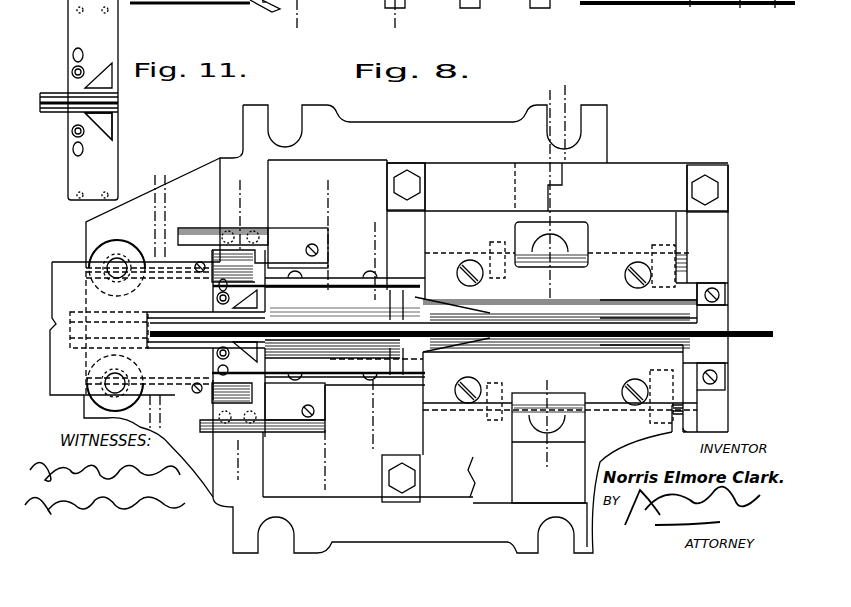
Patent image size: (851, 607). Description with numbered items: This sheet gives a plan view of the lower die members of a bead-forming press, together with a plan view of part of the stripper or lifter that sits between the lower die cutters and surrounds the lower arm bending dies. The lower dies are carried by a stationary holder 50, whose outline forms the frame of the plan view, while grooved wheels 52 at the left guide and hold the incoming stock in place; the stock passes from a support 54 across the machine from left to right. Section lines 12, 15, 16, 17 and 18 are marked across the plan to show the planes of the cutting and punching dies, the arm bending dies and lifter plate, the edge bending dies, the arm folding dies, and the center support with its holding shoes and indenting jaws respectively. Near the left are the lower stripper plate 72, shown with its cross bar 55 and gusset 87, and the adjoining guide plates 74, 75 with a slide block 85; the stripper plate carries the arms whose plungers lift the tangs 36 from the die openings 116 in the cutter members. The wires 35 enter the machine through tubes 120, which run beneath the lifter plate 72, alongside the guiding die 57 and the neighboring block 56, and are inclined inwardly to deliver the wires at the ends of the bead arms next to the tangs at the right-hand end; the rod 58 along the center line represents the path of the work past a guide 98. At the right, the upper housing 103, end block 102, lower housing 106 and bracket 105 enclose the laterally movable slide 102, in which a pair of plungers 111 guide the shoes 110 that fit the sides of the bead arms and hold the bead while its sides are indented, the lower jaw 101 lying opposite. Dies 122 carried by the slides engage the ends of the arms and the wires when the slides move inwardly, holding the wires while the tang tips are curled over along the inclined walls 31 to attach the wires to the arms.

In FIG. 8, the stationary holder 50 is at (418, 130).
In FIG. 8, the grooved wheels 52 is at (97, 258).
In FIG. 8, the support 54 is at (58, 312).
In FIG. 8, the section line 12— 12 is at (159, 300).
In FIG. 8, the section line 15— 15 is at (239, 329).
In FIG. 8, the section line 16— 16 is at (314, 249).
In FIG. 8, the section line 17— 17 is at (393, 225).
In FIG. 8, the section line 18— 18 is at (553, 259).
In FIG. 8, the slide block 85 is at (262, 337).
In FIG. 8, the upper guide plate 74 is at (292, 243).
In FIG. 8, the lower guide plate 75 is at (252, 383).
In FIG. 11, the lower stripper plate 72 is at (76, 28).
In FIG. 8, the lower stripper plate 72 is at (208, 315).
In FIG. 11, the cross bar 55 is at (52, 98).
In FIG. 8, the cross bar 55 is at (206, 343).
In FIG. 11, the gusset 87 is at (112, 126).
In FIG. 8, the die openings 116 is at (302, 393).
In FIG. 8, the rod 58 is at (738, 333).
In FIG. 8, the tubes 120 is at (340, 288).
In FIG. 8, the guide 98 is at (393, 290).
In FIG. 8, the upper housing 103 is at (632, 175).
In FIG. 8, the slide 102 is at (648, 222).
In FIG. 8, the plungers 111 is at (690, 270).
In FIG. 8, the dies 122 is at (730, 283).
In FIG. 8, the shoes 110 is at (683, 322).
In FIG. 8, the lower jaw 101 is at (710, 347).
In FIG. 8, the lower housing 106 is at (725, 358).
In FIG. 8, the bracket 105 is at (685, 385).
In FIG. 8, the block 56 is at (345, 345).
In FIG. 8, the guiding die 57 is at (386, 356).
In FIG. 8, the tangs 36 is at (215, 4).
In FIG. 8, the inclined walls 31 is at (262, 10).
In FIG. 8, the wires 35 is at (724, 6).